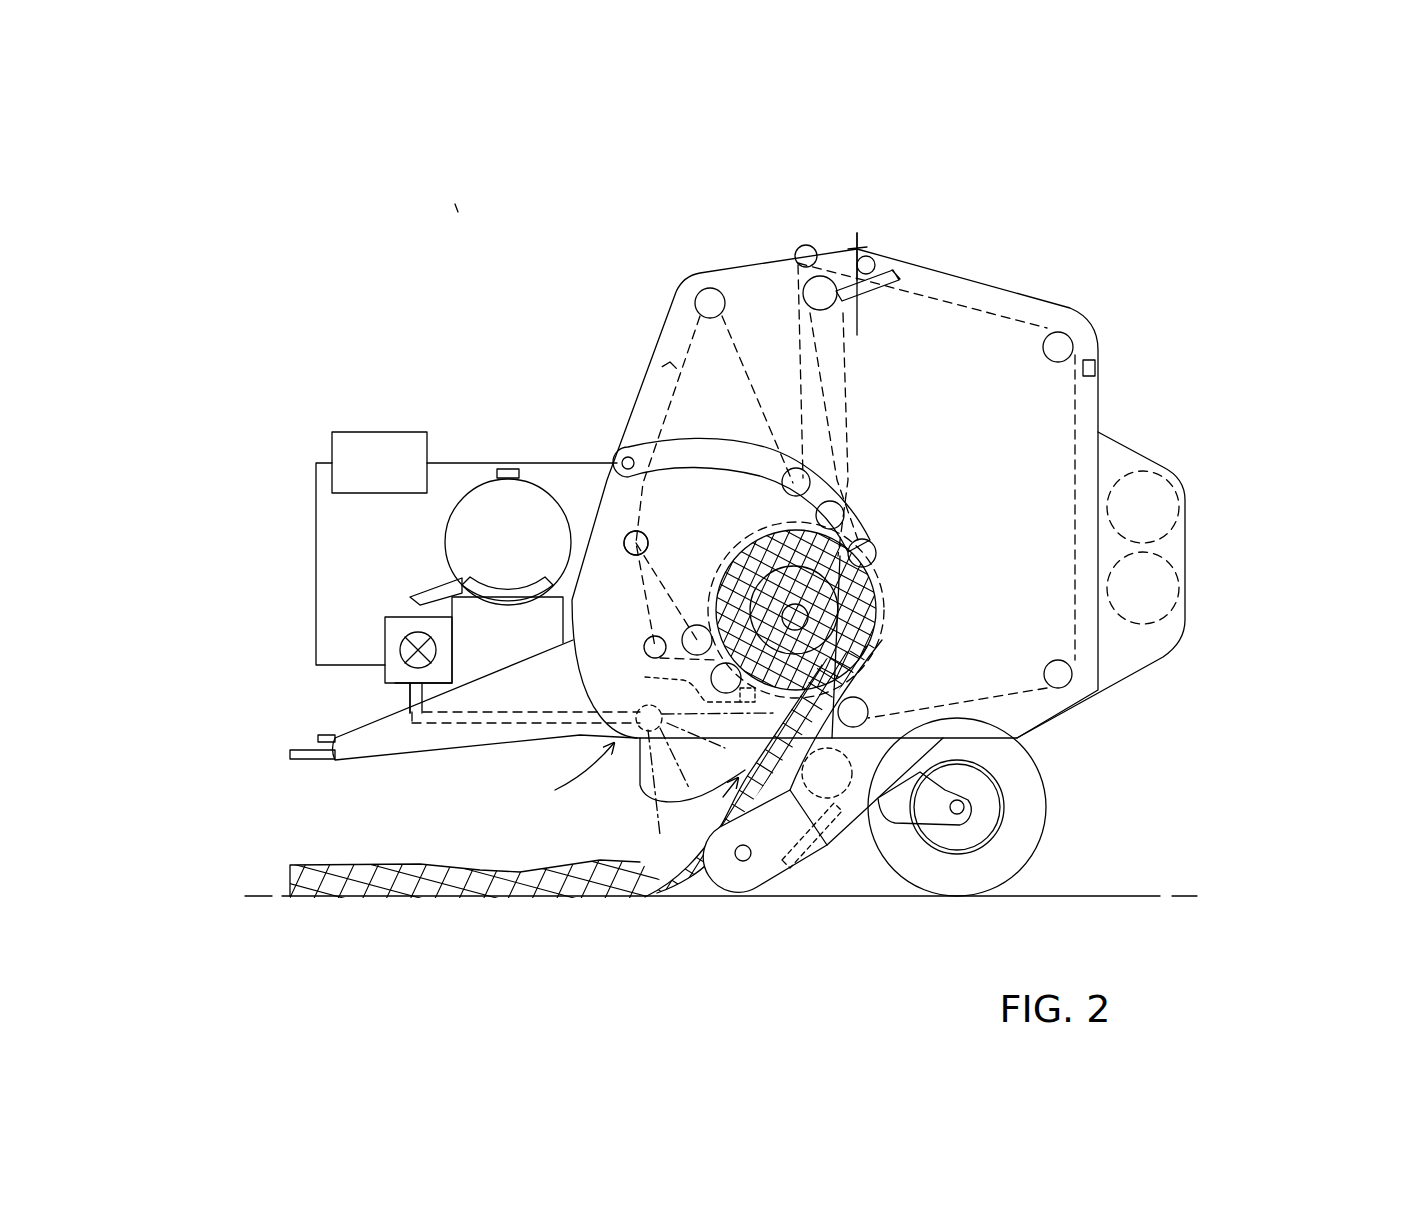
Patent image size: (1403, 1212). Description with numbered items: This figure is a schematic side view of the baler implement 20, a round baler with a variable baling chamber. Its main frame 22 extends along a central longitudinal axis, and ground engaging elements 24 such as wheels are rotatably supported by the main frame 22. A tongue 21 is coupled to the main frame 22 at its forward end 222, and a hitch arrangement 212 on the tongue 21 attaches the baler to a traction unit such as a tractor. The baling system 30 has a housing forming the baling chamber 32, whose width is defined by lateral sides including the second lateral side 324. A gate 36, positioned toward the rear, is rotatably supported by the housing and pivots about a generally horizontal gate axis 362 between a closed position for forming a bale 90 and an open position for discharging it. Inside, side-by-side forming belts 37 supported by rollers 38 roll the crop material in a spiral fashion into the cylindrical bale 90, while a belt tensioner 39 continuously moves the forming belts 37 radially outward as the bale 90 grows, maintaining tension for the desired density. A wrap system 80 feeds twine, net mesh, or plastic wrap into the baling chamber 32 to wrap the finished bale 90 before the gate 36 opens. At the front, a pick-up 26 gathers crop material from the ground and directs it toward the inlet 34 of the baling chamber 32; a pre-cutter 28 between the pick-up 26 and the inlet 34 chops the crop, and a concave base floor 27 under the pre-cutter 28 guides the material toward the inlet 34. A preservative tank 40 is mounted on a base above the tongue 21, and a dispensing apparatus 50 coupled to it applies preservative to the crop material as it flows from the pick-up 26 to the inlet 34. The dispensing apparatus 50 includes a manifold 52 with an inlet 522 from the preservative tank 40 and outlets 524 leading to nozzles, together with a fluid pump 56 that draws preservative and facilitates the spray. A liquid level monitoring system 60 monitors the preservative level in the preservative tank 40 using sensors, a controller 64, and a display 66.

The baler implement 20 is at (458, 212).
The baling system 30 is at (896, 162).
The baling chamber 32 is at (835, 485).
The gate 36 is at (1112, 275).
The gate axis 362 is at (857, 246).
The forming belts 37 is at (676, 362).
The belt tensioner 39 is at (710, 458).
The second lateral side 324 is at (777, 517).
The rollers 38 is at (646, 548).
The bale 90 is at (882, 622).
The wrap system 80 is at (1206, 448).
The display 66 is at (682, 681).
The outlets 524 is at (637, 711).
The controller 64 is at (356, 432).
The dispensing apparatus 50 is at (438, 412).
The preservative tank 40 is at (508, 542).
The liquid level monitoring system 60 is at (507, 478).
The fluid pump 56 is at (395, 620).
The inlet 522 is at (408, 700).
The manifold 52 is at (463, 725).
The hitch arrangement 212 is at (373, 738).
The tongue 21 is at (300, 759).
The forward end 222 is at (560, 780).
The inlet 34 is at (638, 795).
The pick-up 26 is at (707, 862).
The base floor 27 is at (795, 868).
The pre-cutter 28 is at (848, 797).
The main frame 22 is at (1000, 756).
The ground engaging elements 24 is at (1003, 848).